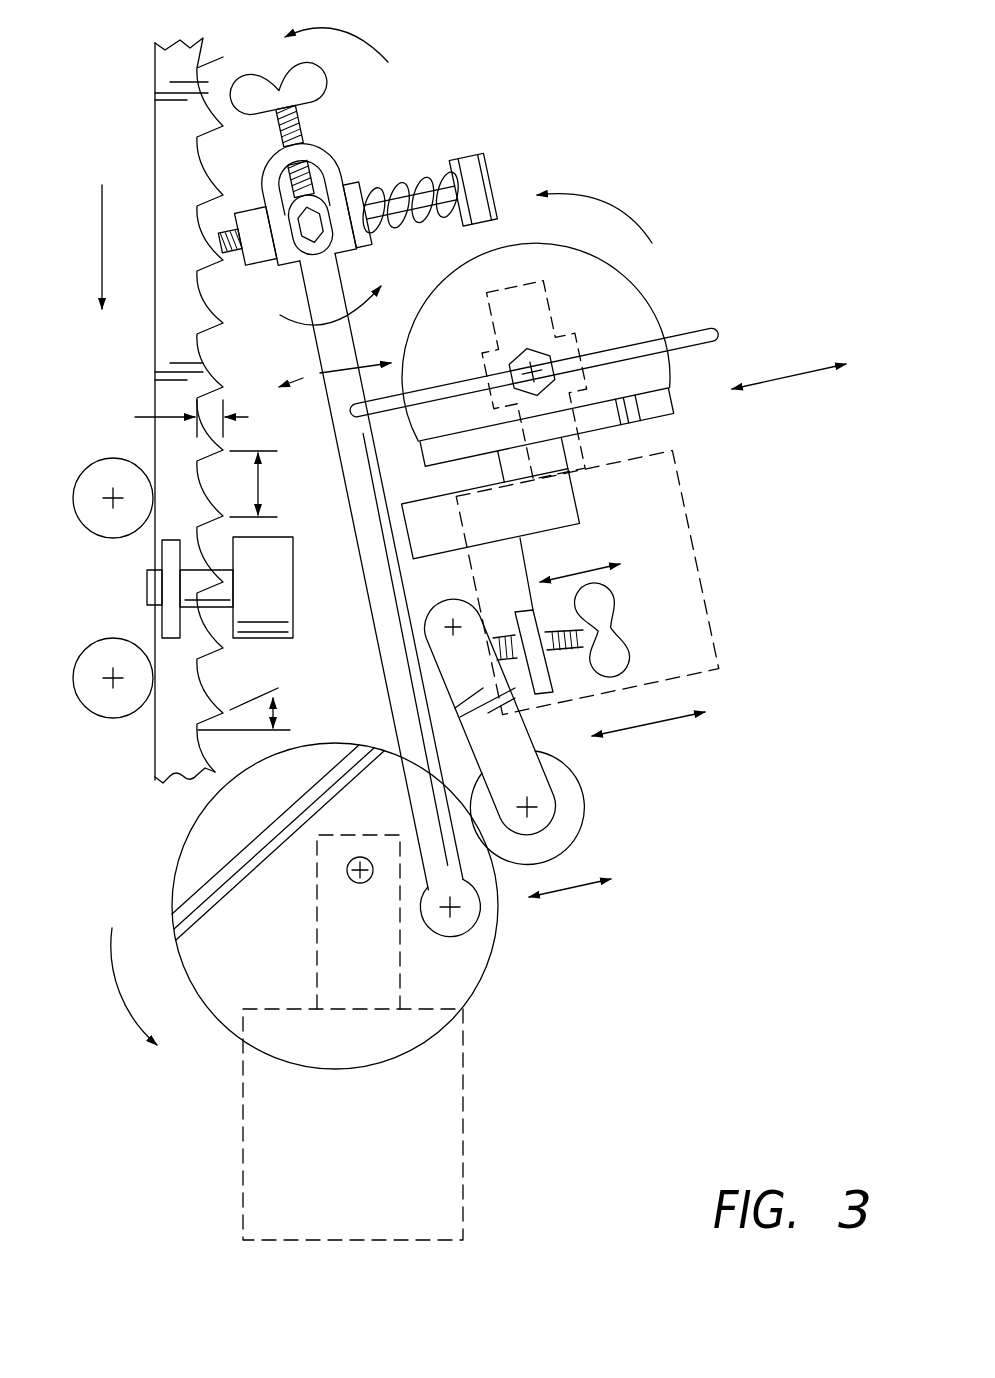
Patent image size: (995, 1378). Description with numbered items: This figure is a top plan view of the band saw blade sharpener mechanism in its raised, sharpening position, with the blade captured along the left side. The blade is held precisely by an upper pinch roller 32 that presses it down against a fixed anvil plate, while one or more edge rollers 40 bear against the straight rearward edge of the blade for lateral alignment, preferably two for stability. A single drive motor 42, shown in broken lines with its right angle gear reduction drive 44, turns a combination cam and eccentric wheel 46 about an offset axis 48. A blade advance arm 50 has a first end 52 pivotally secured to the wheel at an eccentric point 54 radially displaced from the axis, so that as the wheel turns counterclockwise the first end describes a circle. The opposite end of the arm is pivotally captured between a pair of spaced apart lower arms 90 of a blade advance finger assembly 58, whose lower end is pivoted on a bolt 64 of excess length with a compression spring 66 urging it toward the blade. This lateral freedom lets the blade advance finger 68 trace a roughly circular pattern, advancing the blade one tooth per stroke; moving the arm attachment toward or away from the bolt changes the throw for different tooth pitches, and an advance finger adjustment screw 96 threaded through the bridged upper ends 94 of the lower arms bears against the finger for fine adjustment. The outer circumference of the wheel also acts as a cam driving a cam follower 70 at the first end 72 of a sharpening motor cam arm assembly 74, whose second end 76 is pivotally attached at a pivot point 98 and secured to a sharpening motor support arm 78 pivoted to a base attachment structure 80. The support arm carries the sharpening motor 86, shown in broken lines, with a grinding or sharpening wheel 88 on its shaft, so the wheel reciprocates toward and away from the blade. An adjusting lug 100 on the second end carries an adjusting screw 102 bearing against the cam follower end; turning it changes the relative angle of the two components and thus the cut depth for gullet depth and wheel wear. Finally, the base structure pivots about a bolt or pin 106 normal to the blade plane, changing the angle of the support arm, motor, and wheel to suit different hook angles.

The upper pinch roller 32 is at (157, 560).
The edge rollers 40 is at (85, 643).
The drive motor 42 is at (466, 1105).
The right angle gear reduction drive 44 is at (313, 910).
The cam and eccentric wheel 46 is at (180, 865).
The offset axis 48 is at (346, 870).
The blade advance arm 50 is at (383, 668).
The first end 52 is at (460, 937).
The eccentric point 54 is at (458, 911).
The blade advance finger assembly 58 is at (362, 116).
The bolt 64 is at (488, 155).
The compression spring 66 is at (423, 172).
The blade advance finger 68 is at (305, 270).
The cam follower 70 is at (584, 813).
The first end 72 is at (511, 753).
The sharpening motor cam arm assembly 74 is at (657, 593).
The second end 76 is at (582, 508).
The sharpening motor support arm 78 is at (673, 412).
The base attachment structure 80 is at (642, 288).
The sharpening motor 86 is at (705, 554).
The grinding or sharpening wheel 88 is at (720, 327).
The lower arms 90 is at (277, 197).
The upper ends 94 is at (313, 137).
The advance finger adjustment screw 96 is at (278, 88).
The pivot point 98 is at (453, 625).
The adjusting lug 100 is at (515, 612).
The adjusting screw 102 is at (610, 629).
The bolt or pin 106 is at (510, 362).